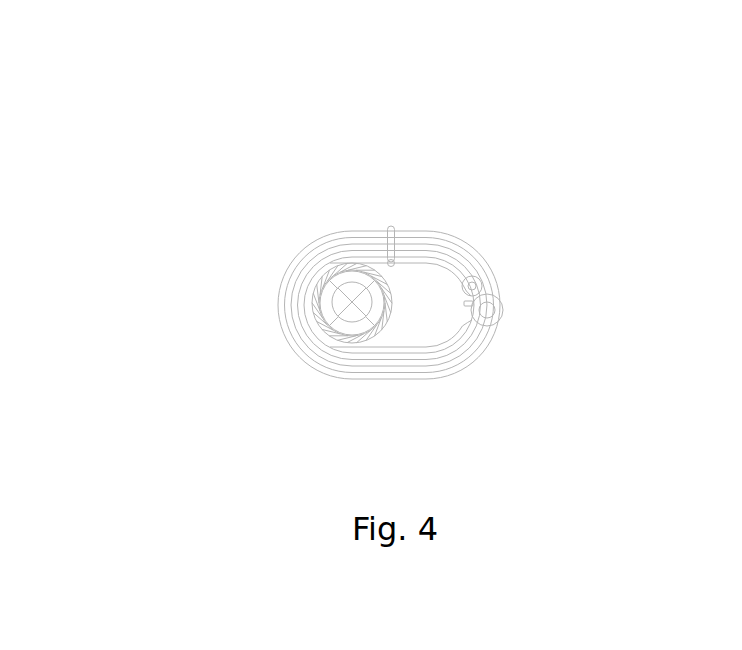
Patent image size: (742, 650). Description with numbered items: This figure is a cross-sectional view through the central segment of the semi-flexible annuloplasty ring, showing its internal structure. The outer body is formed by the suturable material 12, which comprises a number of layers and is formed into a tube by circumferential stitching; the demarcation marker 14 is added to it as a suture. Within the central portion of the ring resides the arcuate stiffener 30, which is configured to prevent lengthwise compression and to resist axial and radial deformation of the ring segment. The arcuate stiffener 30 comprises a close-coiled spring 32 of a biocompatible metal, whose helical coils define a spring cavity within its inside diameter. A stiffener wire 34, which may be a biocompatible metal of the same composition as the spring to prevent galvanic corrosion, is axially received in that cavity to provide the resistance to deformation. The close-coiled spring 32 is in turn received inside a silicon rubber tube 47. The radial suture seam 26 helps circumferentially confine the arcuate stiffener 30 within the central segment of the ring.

The suturable material 12 is at (452, 236).
The demarcation marker 14 is at (390, 226).
The radial suture seam 26 is at (500, 290).
The arcuate stiffener 30 is at (401, 308).
The close-coiled spring 32 is at (330, 290).
The stiffener wire 34 is at (372, 318).
The silicon rubber tube 47 is at (322, 326).